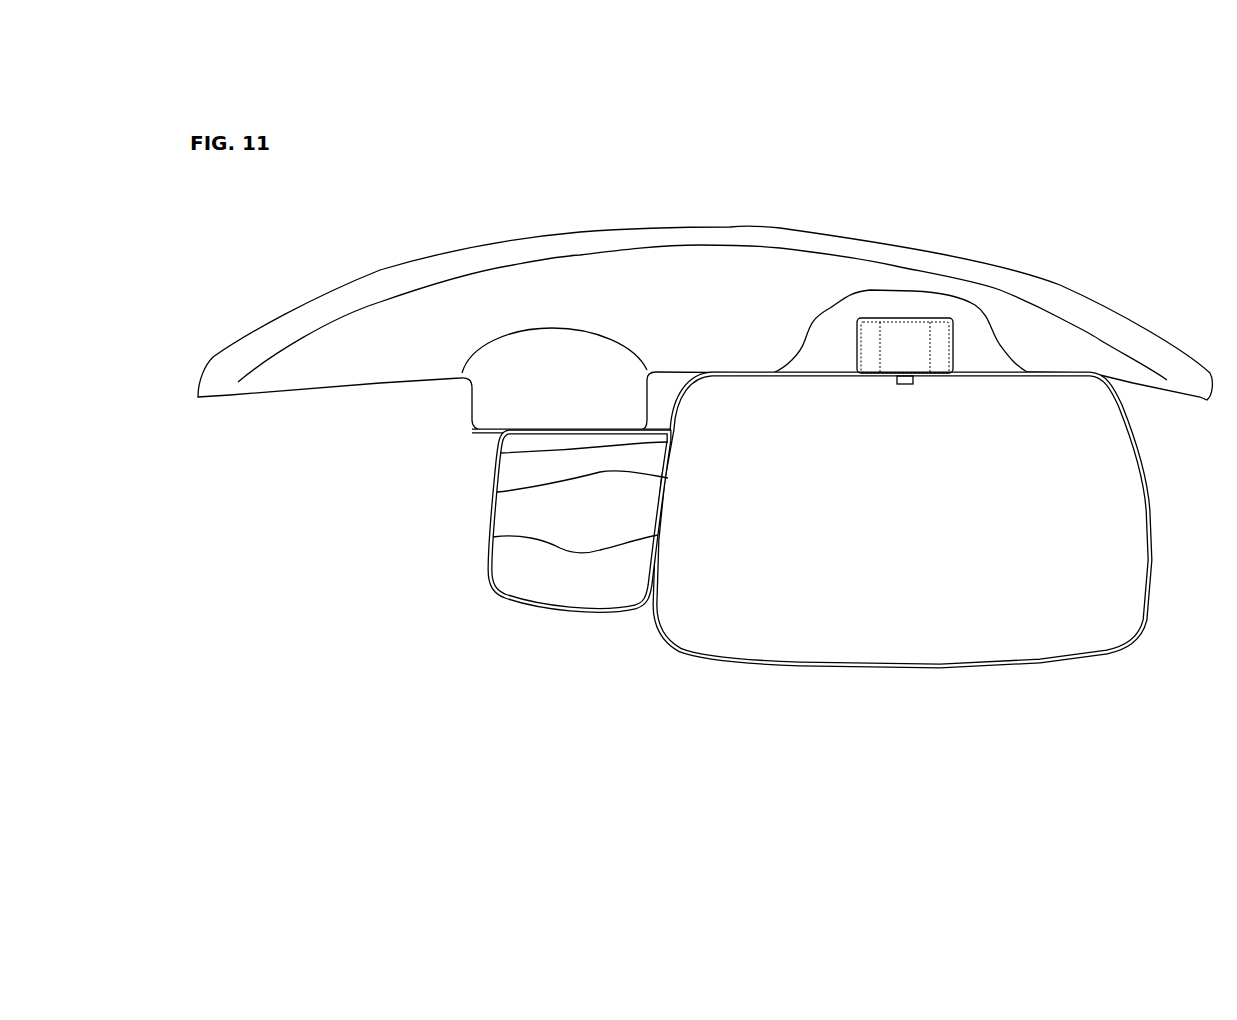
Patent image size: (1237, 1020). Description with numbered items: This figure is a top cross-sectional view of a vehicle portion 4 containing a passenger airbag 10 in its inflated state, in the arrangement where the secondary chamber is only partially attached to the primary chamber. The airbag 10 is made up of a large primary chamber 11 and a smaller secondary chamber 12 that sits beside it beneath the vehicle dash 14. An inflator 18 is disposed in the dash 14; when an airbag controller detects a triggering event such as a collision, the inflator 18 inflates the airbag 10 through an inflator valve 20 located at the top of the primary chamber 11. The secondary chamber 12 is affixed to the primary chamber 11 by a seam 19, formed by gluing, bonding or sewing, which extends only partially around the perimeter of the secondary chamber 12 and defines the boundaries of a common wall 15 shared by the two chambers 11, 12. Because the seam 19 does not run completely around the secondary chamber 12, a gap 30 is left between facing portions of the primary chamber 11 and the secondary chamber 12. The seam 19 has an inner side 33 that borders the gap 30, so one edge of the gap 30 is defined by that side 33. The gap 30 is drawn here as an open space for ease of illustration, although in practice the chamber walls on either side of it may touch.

The vehicle portion 4 is at (357, 561).
The passenger airbag 10 is at (1066, 680).
The primary chamber 11 is at (933, 667).
The secondary chamber 12 is at (527, 600).
The vehicle dash 14 is at (340, 373).
The wall 15 is at (500, 453).
The inflator 18 is at (910, 337).
The seam 19 is at (497, 492).
The inflator valve 20 is at (907, 384).
The gap 30 is at (647, 596).
The inner side 33 is at (493, 537).